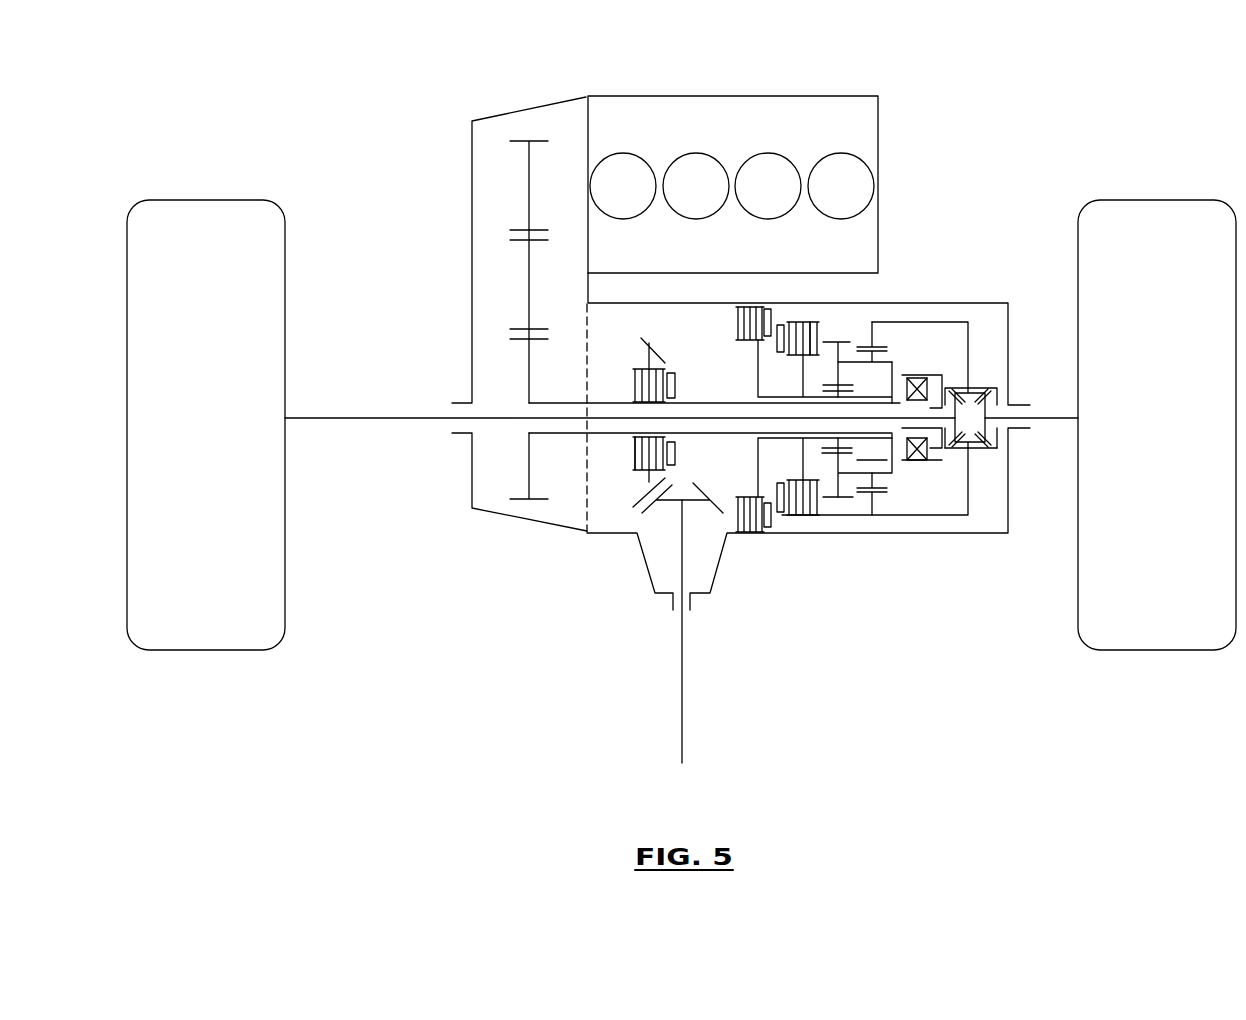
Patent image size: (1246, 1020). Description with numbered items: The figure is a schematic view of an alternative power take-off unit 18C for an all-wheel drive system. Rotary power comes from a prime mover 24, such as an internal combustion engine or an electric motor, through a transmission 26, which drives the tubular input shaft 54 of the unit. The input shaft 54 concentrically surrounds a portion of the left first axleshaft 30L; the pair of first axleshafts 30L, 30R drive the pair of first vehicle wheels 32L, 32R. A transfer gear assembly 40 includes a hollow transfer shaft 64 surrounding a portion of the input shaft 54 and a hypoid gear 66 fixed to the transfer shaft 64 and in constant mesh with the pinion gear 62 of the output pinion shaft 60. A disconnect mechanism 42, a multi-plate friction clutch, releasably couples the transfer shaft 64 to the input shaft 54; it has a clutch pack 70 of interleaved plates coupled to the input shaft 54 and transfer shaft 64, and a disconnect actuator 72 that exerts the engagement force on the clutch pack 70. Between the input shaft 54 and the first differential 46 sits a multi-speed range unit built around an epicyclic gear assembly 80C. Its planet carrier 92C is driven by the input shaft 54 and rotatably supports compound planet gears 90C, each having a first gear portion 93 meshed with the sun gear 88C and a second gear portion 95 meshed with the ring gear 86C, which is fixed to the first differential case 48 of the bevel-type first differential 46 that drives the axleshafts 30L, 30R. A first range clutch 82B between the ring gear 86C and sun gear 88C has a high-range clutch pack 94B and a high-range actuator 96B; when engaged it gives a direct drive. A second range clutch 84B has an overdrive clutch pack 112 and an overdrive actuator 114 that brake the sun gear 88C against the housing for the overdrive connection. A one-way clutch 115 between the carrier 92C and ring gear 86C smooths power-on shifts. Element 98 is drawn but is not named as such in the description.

The power take-off unit 18C is at (645, 566).
The prime mover 24 is at (856, 94).
The transmission 26 is at (562, 98).
The first axleshaft 30L is at (337, 418).
The first axleshaft 30R is at (1060, 418).
The first vehicle wheel 32L is at (203, 218).
The first vehicle wheel 32R is at (1148, 217).
The transfer gear assembly 40 is at (613, 504).
The disconnect mechanism 42 is at (630, 454).
The first differential 46 is at (988, 384).
The first differential case 48 is at (983, 453).
The tubular input shaft 54 is at (557, 434).
The output pinion shaft 60 is at (683, 651).
The pinion gear 62 is at (723, 511).
The hollow transfer shaft 64 is at (640, 368).
The hypoid gear 66 is at (641, 338).
The clutch pack 70 is at (648, 390).
The disconnect actuator 72 is at (677, 454).
The epicyclic gear assembly 80C is at (929, 500).
The first range clutch 82B is at (806, 318).
The second range clutch 84B is at (758, 301).
The ring gear 86C is at (872, 506).
The sun gear 88C is at (868, 406).
The compound planet gear 90C is at (887, 346).
The planet carrier 92C is at (893, 466).
The first gear portion 93 is at (830, 497).
The high-range clutch pack 94B is at (813, 332).
The second gear portion 95 is at (858, 351).
The high-range actuator 96B is at (780, 353).
The carrier 98 is at (902, 520).
The overdrive clutch pack 112 is at (742, 322).
The overdrive actuator 114 is at (766, 308).
The one-way clutch 115 is at (913, 377).